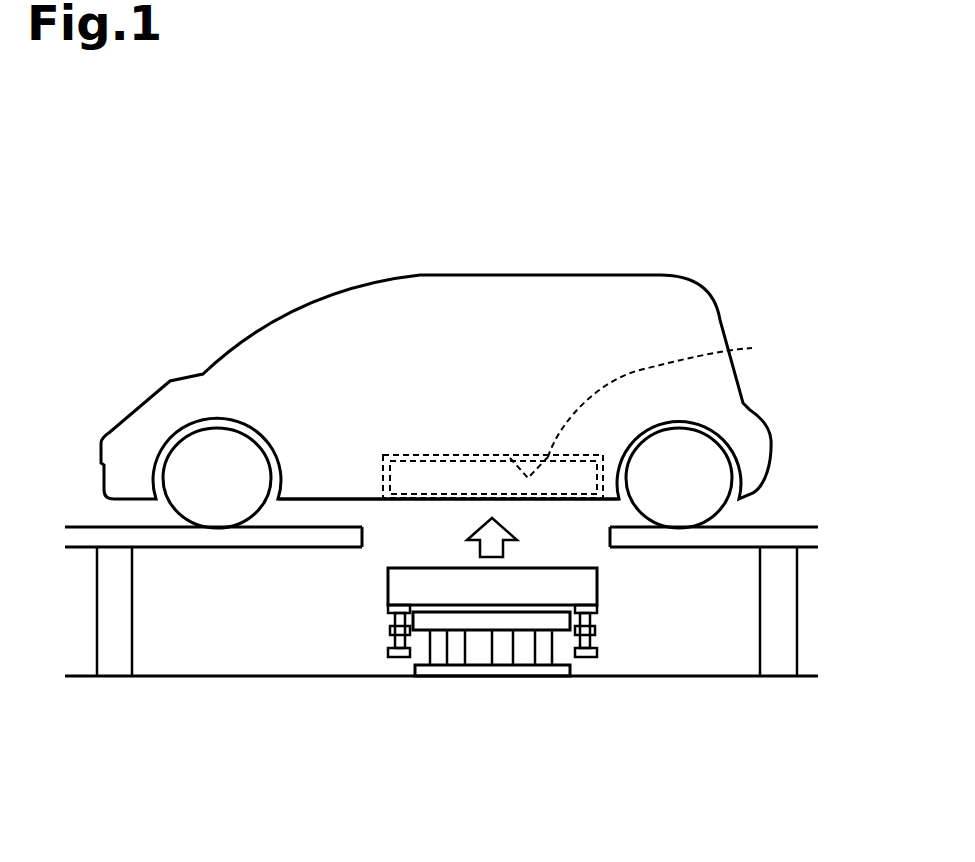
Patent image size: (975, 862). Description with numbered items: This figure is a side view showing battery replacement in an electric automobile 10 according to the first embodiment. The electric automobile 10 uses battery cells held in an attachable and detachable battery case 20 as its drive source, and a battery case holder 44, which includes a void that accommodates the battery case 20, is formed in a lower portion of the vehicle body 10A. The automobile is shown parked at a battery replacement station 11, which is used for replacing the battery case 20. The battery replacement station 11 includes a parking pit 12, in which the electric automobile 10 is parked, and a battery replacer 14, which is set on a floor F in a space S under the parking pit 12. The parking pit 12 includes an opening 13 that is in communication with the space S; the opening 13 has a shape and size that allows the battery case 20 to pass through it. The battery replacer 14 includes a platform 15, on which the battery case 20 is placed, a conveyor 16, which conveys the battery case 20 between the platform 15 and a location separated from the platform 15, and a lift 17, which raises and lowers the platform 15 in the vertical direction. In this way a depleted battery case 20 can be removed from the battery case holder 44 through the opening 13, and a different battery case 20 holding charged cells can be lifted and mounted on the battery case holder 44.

The electric automobile 10 is at (623, 275).
The vehicle body 10A is at (318, 483).
The battery replacement station 11 is at (190, 697).
The parking pit 12 is at (100, 527).
The opening 13 is at (572, 537).
The battery replacer 14 is at (388, 634).
The platform 15 is at (508, 622).
The conveyor 16 is at (390, 608).
The lift 17 is at (477, 650).
The battery case 20 is at (430, 460).
The battery case holder 44 is at (668, 394).
The floor F is at (170, 675).
The space S is at (732, 646).